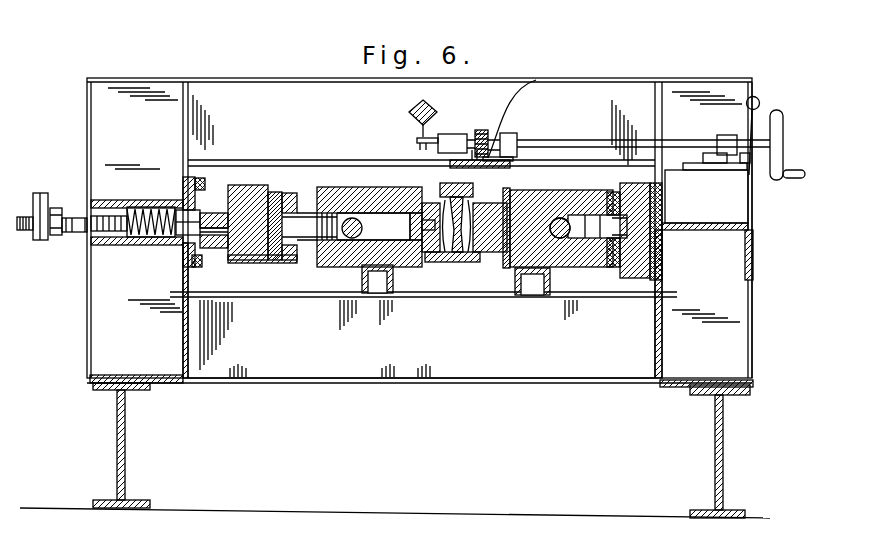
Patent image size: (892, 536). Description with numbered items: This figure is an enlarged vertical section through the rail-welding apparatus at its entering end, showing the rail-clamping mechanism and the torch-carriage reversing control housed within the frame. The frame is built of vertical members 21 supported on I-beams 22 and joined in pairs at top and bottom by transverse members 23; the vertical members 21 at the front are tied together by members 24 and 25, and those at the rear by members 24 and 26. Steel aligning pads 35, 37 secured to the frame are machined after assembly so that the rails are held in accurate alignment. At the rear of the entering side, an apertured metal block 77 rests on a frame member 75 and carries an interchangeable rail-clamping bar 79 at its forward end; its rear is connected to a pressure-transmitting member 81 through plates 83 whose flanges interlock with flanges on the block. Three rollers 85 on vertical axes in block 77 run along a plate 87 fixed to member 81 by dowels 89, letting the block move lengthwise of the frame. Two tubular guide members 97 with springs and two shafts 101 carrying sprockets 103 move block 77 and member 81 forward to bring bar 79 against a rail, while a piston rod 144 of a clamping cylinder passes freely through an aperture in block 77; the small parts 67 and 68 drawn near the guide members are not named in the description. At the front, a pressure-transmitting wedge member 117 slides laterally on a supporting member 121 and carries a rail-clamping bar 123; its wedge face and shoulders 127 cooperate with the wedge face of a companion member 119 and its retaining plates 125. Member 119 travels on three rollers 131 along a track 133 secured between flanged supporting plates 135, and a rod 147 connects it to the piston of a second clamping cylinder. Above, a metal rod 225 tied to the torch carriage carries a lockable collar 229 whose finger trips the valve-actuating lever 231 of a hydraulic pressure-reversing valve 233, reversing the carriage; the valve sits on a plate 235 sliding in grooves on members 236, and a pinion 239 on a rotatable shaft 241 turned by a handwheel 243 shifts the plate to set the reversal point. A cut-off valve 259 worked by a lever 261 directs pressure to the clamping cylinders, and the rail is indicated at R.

The vertical members 21 is at (87, 336).
The I-beams 22 is at (716, 426).
The transverse members 23 is at (302, 66).
The members 24 is at (182, 350).
The members 25 is at (753, 249).
The members 26 is at (152, 205).
The aligning pad 35 is at (190, 180).
The aligning pad 37 is at (645, 272).
The bearing 67 is at (203, 185).
The nut 68 is at (188, 262).
The frame member 75 is at (360, 272).
The apertured metal block 77 is at (355, 187).
The rail-clamping bar 79 is at (437, 205).
The pressure-transmitting member 81 is at (250, 195).
The plates 83 is at (250, 262).
The rollers 85 is at (302, 222).
The plate 87 is at (282, 258).
The dowels 89 is at (292, 192).
The tubular guide members 97 is at (211, 250).
The shafts 101 is at (107, 223).
The sprockets 103 is at (45, 205).
The pressure-transmitting wedge member 117 is at (480, 252).
The pressure-transmitting wedge member 119 is at (548, 205).
The supporting member 121 is at (552, 268).
The rail-clamping bar 123 is at (460, 262).
The retaining plates 125 is at (500, 268).
The shoulders 127 is at (509, 140).
The rollers 131 is at (566, 216).
The track 133 is at (655, 250).
The flanged supporting plates 135 is at (662, 200).
The piston rod 144 is at (350, 238).
The rod 147 is at (582, 164).
The metal rod 225 is at (432, 118).
The collar 229 is at (440, 138).
The valve-actuating lever 231 is at (418, 140).
The hydraulic pressure-reversing valve 233 is at (450, 160).
The plate 235 is at (487, 130).
The members 236 is at (514, 165).
The pinion 239 is at (528, 111).
The rotatable shaft 241 is at (566, 142).
The handwheel 243 is at (775, 180).
The cut-off valve 259 is at (710, 158).
The lever 261 is at (756, 100).
The valve region R is at (432, 258).